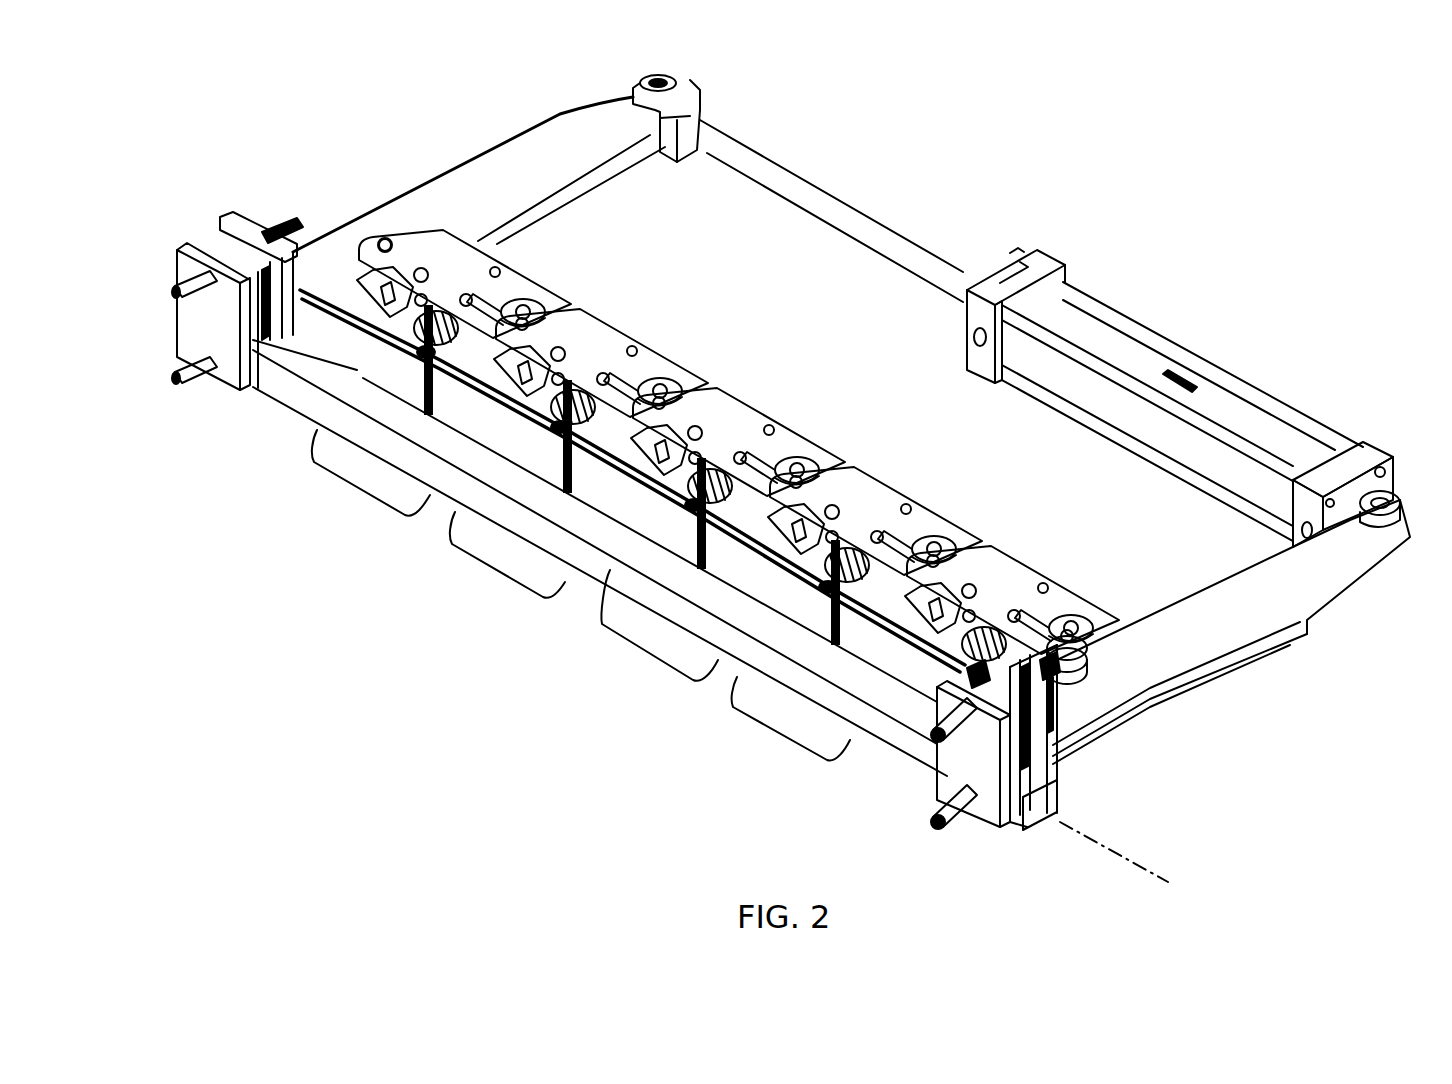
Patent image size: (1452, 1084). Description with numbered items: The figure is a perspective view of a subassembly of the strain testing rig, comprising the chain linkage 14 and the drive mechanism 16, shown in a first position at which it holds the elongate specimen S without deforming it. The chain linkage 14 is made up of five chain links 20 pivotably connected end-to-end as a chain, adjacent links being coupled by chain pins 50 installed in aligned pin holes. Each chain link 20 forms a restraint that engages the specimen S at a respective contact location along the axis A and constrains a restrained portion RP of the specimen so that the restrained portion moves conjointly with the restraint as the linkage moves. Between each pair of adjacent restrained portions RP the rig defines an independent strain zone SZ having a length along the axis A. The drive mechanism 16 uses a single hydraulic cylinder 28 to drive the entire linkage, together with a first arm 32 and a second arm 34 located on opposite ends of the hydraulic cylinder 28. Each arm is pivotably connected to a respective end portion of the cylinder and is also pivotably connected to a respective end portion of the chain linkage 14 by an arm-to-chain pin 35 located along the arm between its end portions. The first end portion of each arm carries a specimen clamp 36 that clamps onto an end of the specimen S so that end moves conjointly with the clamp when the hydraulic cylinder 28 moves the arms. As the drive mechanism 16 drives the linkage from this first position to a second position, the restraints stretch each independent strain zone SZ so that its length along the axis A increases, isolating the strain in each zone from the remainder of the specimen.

The chain linkage 14 is at (745, 318).
The drive mechanism 16 is at (1157, 315).
The chain link 20 is at (512, 291).
The hydraulic cylinder 28 is at (1060, 290).
The first arm 32 is at (480, 163).
The second arm 34 is at (1197, 662).
The arm-to-chain pin 35 is at (377, 238).
The specimen clamp 36 is at (230, 223).
The chain pin 50 is at (657, 393).
The restrained portion RP is at (332, 408).
The independent strain zone SZ is at (348, 485).
The elongate specimen S is at (1045, 802).
The axis A is at (1127, 857).